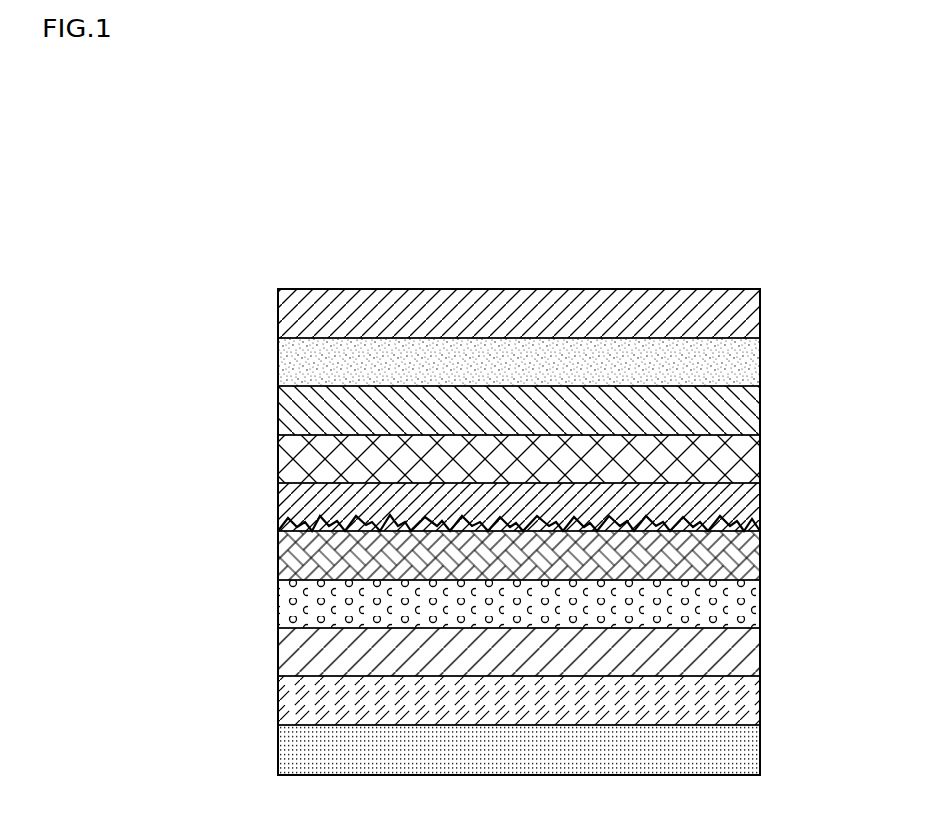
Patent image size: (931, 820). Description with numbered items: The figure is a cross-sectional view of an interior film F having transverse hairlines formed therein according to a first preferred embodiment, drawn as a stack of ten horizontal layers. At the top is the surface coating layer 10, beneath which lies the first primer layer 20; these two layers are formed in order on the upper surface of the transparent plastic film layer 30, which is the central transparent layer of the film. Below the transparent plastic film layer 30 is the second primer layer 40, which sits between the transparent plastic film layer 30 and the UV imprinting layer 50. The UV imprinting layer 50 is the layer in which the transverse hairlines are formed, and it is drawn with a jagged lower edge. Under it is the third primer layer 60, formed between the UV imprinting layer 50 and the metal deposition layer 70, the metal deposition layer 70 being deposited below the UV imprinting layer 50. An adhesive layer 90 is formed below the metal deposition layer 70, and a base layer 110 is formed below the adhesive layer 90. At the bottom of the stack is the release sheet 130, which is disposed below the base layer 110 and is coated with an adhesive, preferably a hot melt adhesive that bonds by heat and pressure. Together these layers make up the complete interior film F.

The surface coating layer 10 is at (295, 319).
The first primer layer 20 is at (295, 367).
The transparent plastic film layer 30 is at (295, 415).
The second primer layer 40 is at (295, 464).
The UV imprinting layer 50 is at (295, 512).
The third primer layer 60 is at (295, 562).
The metal deposition layer 70 is at (295, 610).
The adhesive layer 90 is at (295, 658).
The base layer 110 is at (295, 706).
The release sheet 130 is at (295, 754).
The interior film F is at (745, 265).